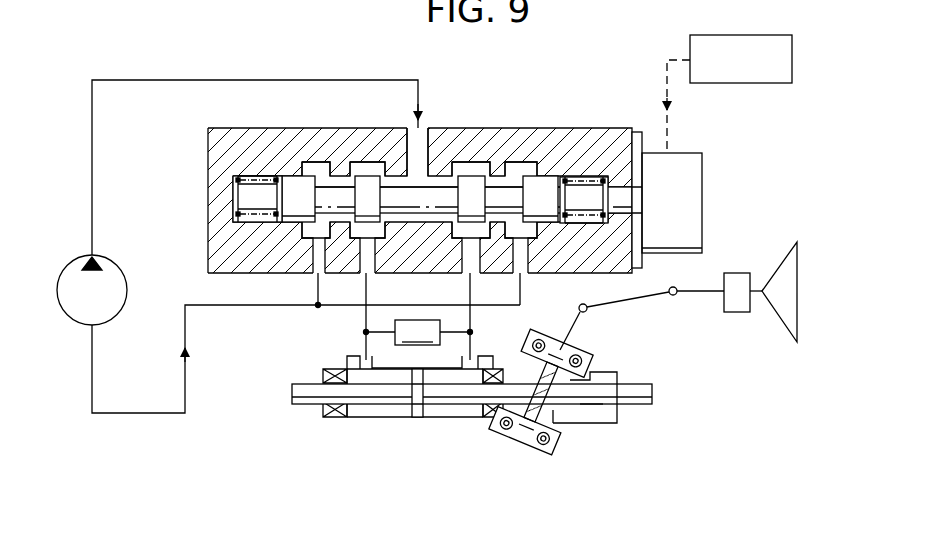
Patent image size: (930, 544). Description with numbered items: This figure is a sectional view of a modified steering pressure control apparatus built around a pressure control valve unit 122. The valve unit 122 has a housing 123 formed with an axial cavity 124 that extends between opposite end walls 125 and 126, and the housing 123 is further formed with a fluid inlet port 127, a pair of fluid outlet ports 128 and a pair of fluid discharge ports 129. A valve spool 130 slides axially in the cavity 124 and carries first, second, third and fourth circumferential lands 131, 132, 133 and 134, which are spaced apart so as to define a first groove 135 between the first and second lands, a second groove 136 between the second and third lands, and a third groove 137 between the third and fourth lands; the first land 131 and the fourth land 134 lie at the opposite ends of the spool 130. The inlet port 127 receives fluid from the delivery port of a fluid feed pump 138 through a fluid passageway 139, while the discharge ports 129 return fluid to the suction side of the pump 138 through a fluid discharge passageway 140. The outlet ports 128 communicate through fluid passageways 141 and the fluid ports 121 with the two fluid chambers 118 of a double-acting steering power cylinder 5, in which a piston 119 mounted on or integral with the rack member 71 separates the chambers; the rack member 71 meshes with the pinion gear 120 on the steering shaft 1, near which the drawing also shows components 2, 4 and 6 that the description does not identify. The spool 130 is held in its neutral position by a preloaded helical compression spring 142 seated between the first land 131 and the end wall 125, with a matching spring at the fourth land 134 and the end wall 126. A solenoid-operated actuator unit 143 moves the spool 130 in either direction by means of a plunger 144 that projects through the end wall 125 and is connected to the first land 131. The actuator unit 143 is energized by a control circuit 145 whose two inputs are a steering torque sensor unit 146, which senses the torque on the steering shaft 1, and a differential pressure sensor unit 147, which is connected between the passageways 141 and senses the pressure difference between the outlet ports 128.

The steering shaft 1 is at (706, 290).
The horn / output member 2 is at (775, 278).
The nut member 4 is at (597, 372).
The steering power cylinder 5 is at (352, 420).
The shaft 6 is at (293, 402).
The rack member 71 is at (585, 391).
The first fluid chamber 118 is at (381, 418).
The piston 119 is at (418, 419).
The pinion gear 120 is at (547, 423).
The first fluid port 121 is at (347, 361).
The pressure control valve unit 122 is at (521, 100).
The housing 123 is at (204, 162).
The axial cavity 124 is at (397, 175).
The end wall 125 is at (638, 135).
The end wall 126 is at (206, 203).
The fluid inlet port 127 is at (426, 131).
The first fluid outlet port 128 is at (466, 280).
The first fluid discharge port 129 is at (314, 279).
The valve spool 130 is at (457, 200).
The first land 131 is at (584, 178).
The second land 132 is at (471, 175).
The third land 133 is at (372, 175).
The fourth land 134 is at (273, 176).
The first groove 135 is at (526, 175).
The second groove 136 is at (436, 224).
The third groove 137 is at (318, 163).
The fluid feed pump 138 is at (116, 270).
The fluid passageway 139 is at (250, 80).
The fluid discharge passageway 140 is at (186, 374).
The fluid passageway 141 is at (472, 292).
The first preloaded helical compression spring 142 is at (266, 223).
The solenoid-operated actuator unit 143 is at (703, 201).
The plunger 144 is at (636, 218).
The control circuit 145 is at (745, 84).
The steering torque sensor unit 146 is at (737, 313).
The differential pressure sensor unit 147 is at (417, 332).